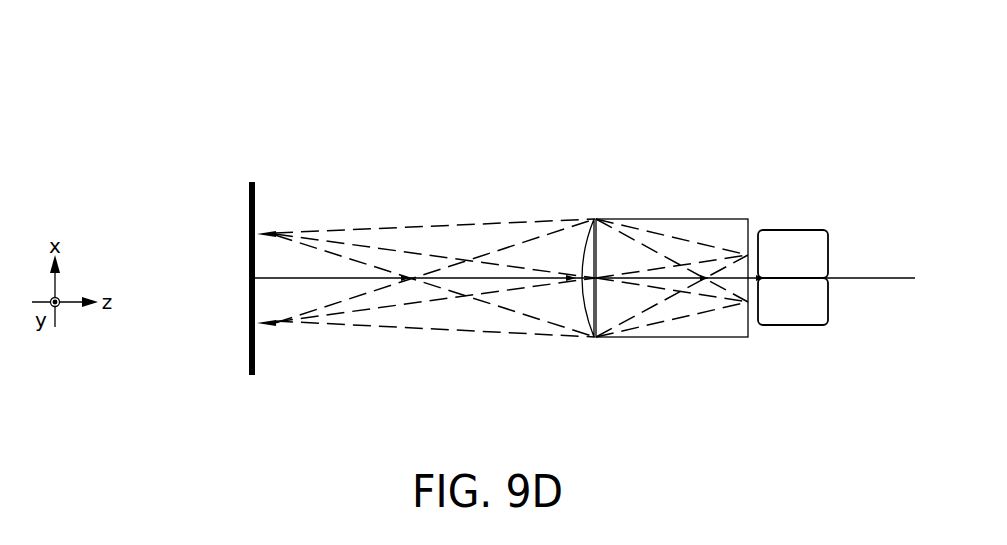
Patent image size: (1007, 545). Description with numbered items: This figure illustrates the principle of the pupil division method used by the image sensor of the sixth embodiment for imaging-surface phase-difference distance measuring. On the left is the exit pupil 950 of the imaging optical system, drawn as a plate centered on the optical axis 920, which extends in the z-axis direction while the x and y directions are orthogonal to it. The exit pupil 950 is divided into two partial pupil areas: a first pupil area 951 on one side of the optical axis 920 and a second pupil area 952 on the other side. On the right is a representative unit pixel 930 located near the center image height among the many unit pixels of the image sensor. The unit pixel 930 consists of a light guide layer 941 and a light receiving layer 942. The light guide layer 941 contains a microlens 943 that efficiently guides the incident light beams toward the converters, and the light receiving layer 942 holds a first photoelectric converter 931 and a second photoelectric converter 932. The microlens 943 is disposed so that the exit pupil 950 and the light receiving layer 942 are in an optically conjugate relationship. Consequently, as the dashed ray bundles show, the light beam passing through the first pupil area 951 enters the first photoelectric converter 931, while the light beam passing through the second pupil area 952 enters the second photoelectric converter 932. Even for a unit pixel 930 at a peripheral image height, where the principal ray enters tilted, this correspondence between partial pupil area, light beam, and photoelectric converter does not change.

The optical axis 920 is at (318, 277).
The unit pixel 930 is at (713, 347).
The first photoelectric converter 931 is at (807, 303).
The second photoelectric converter 932 is at (807, 255).
The light guide layer 941 is at (743, 202).
The light receiving layer 942 is at (842, 202).
The microlens 943 is at (583, 335).
The exit pupil 950 is at (254, 181).
The first pupil area 951 is at (228, 187).
The second pupil area 952 is at (228, 278).